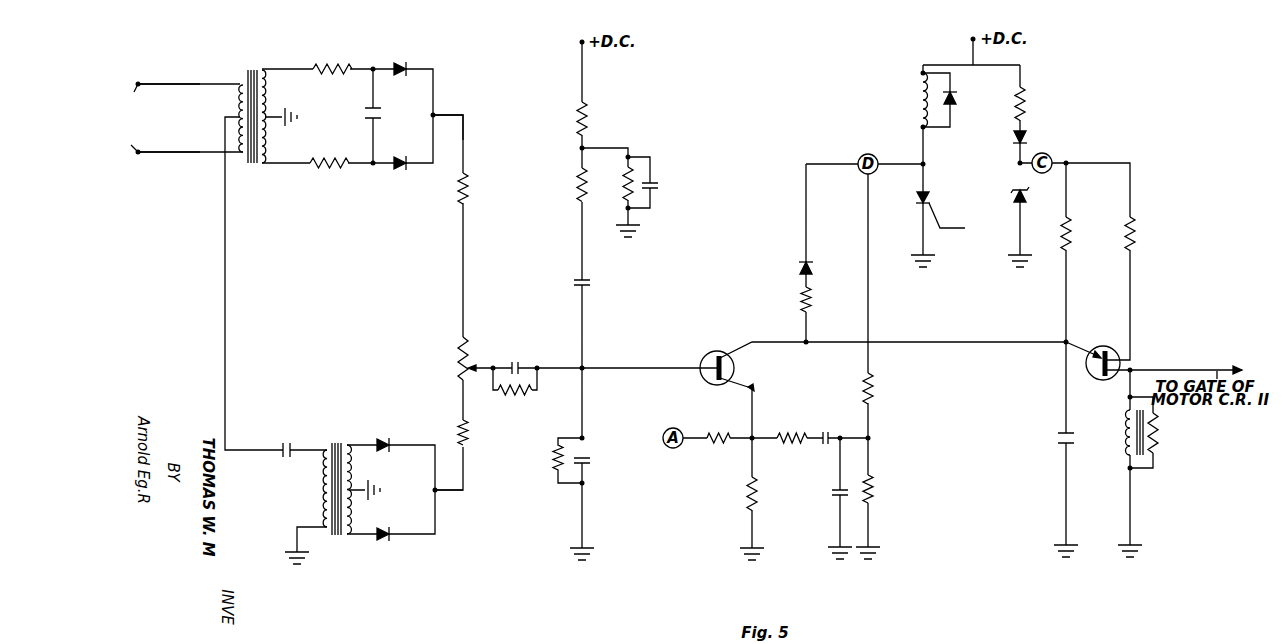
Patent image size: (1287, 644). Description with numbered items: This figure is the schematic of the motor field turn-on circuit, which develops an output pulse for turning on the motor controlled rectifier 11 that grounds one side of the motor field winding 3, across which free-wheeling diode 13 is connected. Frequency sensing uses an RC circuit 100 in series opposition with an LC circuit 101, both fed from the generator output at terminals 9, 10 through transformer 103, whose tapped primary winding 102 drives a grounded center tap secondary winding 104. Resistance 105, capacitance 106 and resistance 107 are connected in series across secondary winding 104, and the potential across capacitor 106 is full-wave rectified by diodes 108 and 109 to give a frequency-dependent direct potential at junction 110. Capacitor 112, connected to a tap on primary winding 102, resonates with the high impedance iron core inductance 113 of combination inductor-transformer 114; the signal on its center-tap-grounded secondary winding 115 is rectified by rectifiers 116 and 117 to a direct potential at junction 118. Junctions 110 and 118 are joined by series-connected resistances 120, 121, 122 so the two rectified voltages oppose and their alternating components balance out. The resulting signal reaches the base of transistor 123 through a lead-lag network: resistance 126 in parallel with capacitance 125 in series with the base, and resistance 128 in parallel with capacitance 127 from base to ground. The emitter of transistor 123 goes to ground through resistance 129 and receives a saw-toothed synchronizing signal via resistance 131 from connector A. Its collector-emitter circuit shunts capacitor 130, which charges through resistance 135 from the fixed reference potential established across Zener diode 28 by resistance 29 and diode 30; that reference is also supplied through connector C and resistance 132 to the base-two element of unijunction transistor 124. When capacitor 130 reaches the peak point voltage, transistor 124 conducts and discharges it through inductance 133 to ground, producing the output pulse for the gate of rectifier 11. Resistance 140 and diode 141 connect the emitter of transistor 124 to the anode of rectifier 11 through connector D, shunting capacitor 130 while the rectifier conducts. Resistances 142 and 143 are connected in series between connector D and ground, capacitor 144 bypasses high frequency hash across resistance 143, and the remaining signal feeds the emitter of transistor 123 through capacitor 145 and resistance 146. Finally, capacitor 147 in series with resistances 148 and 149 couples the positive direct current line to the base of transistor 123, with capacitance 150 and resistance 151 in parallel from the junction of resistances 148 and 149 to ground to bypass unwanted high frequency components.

The motor field winding 3 is at (920, 97).
The input terminal 9 is at (157, 99).
The input terminal 10 is at (155, 141).
The motor controlled rectifier 11 is at (933, 197).
The free-wheeling diode 13 is at (957, 98).
The Zener diode 28 is at (1017, 192).
The resistance 29 is at (1023, 90).
The diode 30 is at (1025, 138).
The RC circuit 100 is at (300, 170).
The LC circuit 101 is at (350, 430).
The primary winding 102 is at (237, 92).
The transformer 103 is at (243, 68).
The secondary winding 104 is at (268, 95).
The resistance 105 is at (325, 56).
The capacitance 106 is at (383, 110).
The resistance 107 is at (327, 158).
The diode 108 is at (402, 63).
The diode 109 is at (402, 168).
The junction 110 is at (438, 113).
The capacitor 112 is at (285, 460).
The iron core inductance 113 is at (320, 497).
The combination inductor-transformer 114 is at (338, 538).
The secondary winding 115 is at (357, 513).
The rectifier 116 is at (388, 442).
The rectifier 117 is at (393, 538).
The junction 118 is at (440, 495).
The resistance 120 is at (468, 190).
The resistance 121 is at (465, 343).
The resistance 122 is at (468, 430).
The transistor 123 is at (710, 355).
The unijunction transistor 124 is at (1108, 348).
The capacitance 125 is at (520, 362).
The resistance 126 is at (520, 390).
The capacitance 127 is at (587, 457).
The resistance 128 is at (555, 475).
The resistance 129 is at (748, 495).
The capacitor 130 is at (1062, 435).
The resistance 131 is at (717, 447).
The resistance 132 is at (1133, 220).
The inductance 133 is at (1132, 442).
The resistance 135 is at (1070, 232).
The resistance 140 is at (800, 305).
The diode 141 is at (797, 268).
The resistor 142 is at (872, 402).
The resistance 143 is at (870, 502).
The capacitor 144 is at (835, 500).
The capacitor 145 is at (832, 432).
The resistance 146 is at (787, 425).
The capacitor 147 is at (588, 282).
The resistance 148 is at (577, 188).
The resistance 149 is at (577, 130).
The capacitance 150 is at (655, 180).
The resistance 151 is at (625, 185).